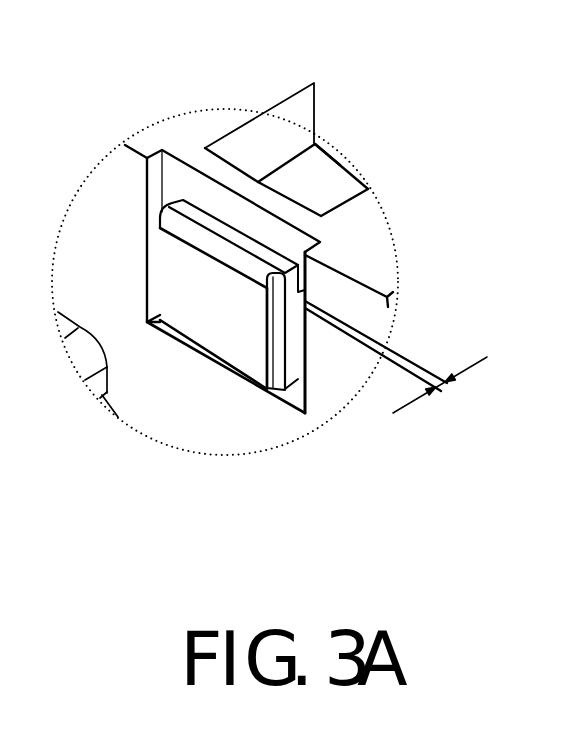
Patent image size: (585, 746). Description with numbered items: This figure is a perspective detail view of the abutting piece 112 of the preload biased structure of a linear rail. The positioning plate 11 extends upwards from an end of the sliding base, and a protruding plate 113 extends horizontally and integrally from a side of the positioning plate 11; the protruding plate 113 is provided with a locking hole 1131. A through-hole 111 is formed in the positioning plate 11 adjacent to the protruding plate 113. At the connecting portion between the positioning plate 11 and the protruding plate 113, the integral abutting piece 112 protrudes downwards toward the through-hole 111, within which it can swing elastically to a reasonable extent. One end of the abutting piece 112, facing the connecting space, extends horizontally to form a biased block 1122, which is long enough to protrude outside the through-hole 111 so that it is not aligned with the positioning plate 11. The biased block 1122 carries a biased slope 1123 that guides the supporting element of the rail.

The positioning plate 11 is at (363, 317).
The through-hole 111 is at (294, 397).
The abutting piece 112 is at (238, 212).
The protruding plate 113 is at (365, 215).
The locking hole 1131 is at (325, 175).
The biased block 1122 is at (222, 328).
The biased slope 1123 is at (203, 237).